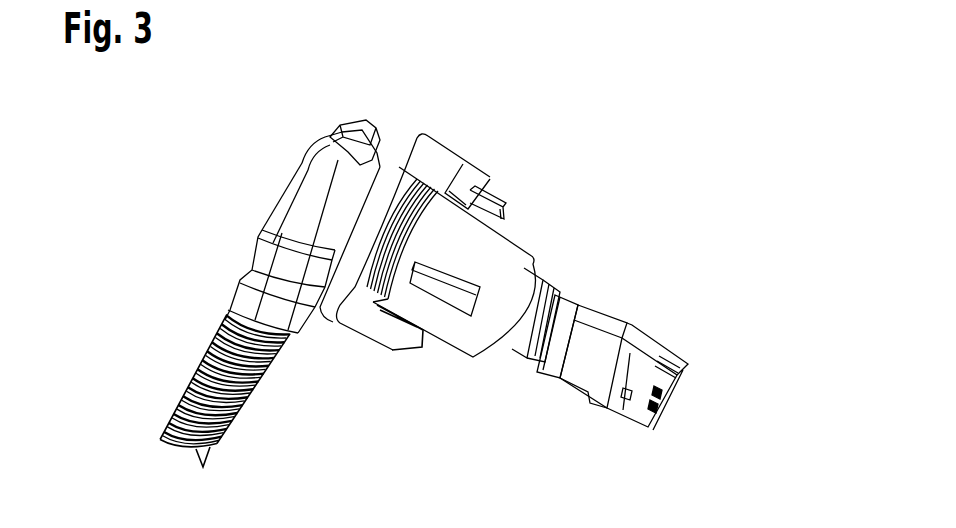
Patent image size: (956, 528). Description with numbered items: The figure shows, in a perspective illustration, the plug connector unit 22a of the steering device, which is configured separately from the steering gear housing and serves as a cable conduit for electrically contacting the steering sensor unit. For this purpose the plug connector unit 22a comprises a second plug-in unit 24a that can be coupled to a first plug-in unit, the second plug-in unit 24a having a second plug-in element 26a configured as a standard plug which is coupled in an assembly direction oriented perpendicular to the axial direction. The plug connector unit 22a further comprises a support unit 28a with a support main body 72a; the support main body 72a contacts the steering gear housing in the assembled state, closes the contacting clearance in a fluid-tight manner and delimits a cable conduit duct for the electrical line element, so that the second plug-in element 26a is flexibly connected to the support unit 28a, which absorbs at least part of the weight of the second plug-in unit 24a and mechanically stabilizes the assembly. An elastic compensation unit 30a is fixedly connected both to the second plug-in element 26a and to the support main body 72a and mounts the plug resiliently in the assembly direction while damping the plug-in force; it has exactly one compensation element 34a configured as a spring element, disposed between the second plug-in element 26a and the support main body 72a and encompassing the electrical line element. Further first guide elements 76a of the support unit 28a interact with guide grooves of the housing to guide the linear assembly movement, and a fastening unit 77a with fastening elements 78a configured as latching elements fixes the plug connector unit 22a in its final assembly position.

The plug connector unit 22a is at (597, 145).
The second plug-in unit 24a is at (643, 315).
The second plug-in element 26a is at (621, 358).
The support unit 28a is at (283, 165).
The compensation unit 30a is at (559, 275).
The compensation element 34a is at (560, 296).
The support main body 72a is at (291, 199).
The further first guide element 76a is at (505, 196).
The fastening unit 77a is at (464, 138).
The fastening element 78a is at (465, 181).